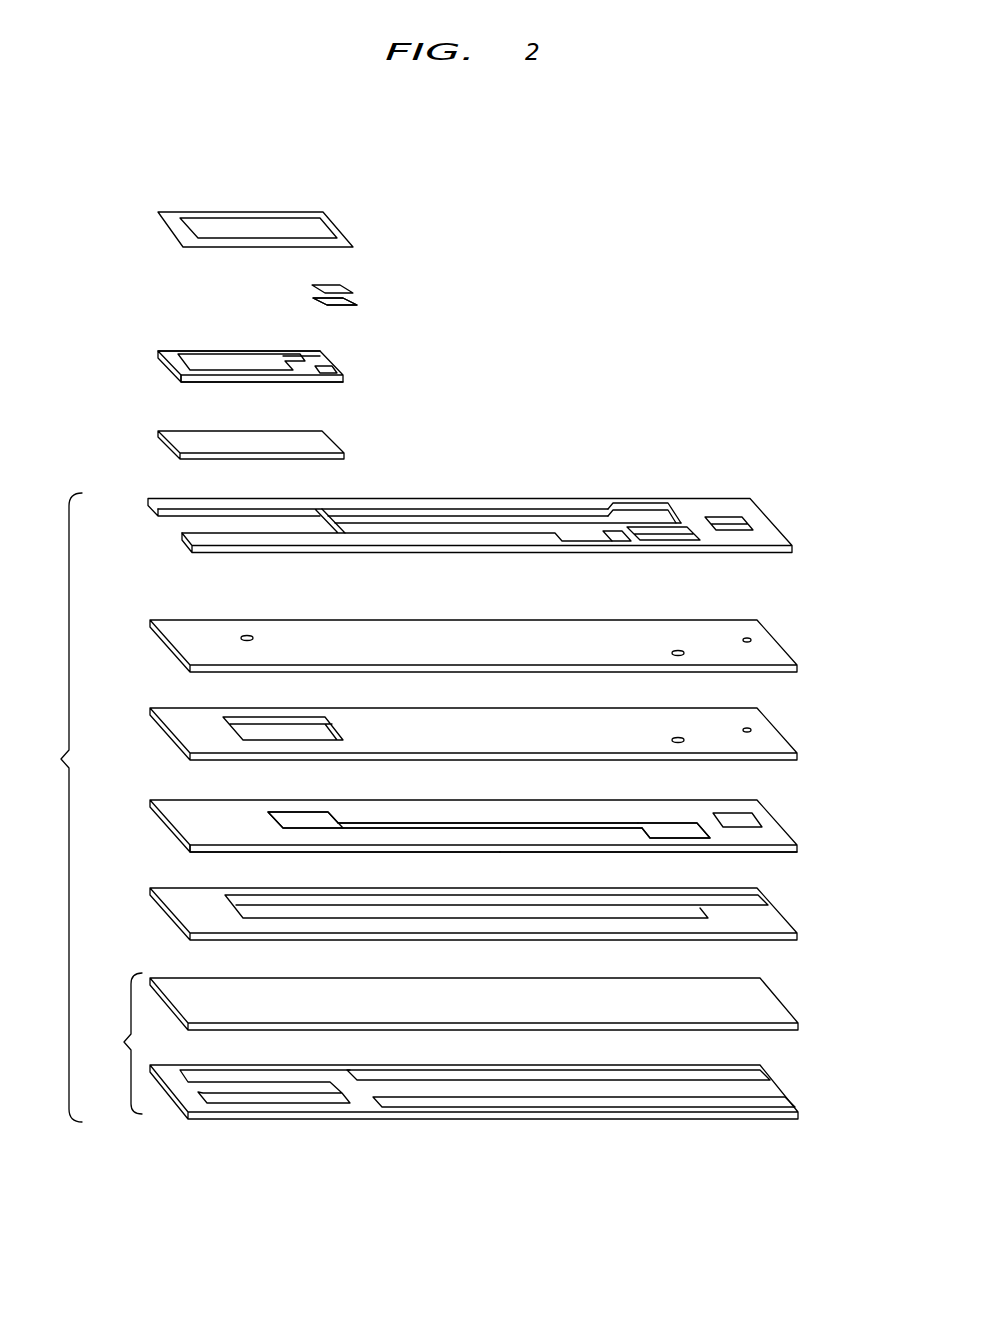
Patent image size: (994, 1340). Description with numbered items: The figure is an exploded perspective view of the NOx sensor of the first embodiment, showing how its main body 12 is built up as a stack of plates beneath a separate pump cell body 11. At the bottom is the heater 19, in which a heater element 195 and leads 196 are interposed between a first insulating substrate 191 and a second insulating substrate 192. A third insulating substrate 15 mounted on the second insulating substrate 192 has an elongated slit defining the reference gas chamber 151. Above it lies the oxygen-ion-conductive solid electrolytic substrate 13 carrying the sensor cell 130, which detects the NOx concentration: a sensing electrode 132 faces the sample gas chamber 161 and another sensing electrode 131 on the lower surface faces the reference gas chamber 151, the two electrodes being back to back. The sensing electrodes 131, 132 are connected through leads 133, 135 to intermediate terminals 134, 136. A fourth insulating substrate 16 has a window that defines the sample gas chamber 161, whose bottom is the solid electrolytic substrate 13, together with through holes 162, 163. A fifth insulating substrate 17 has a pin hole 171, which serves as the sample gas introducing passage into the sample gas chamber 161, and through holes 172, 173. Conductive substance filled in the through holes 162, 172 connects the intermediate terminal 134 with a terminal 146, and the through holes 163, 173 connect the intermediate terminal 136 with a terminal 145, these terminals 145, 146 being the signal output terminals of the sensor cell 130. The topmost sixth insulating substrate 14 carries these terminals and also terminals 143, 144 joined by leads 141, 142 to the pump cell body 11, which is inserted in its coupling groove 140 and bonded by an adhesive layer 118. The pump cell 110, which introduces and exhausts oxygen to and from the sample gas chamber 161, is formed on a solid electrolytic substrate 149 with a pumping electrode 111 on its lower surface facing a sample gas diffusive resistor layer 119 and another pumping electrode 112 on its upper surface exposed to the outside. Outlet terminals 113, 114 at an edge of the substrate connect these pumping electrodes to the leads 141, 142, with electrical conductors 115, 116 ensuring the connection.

The pump cell body 11 is at (150, 352).
The pump cell 110 is at (358, 359).
The pumping electrode 111 is at (225, 381).
The pumping electrode 112 is at (230, 366).
The outlet terminal 113 is at (340, 372).
The outlet terminal 114 is at (298, 355).
The electrical conductor 115 is at (345, 305).
The electrical conductor 116 is at (330, 288).
The adhesive layer 118 is at (290, 213).
The sample gas diffusive resistor layer 119 is at (176, 441).
The solid electrolytic substrate 149 is at (170, 352).
The main body 12 is at (54, 807).
The solid electrolytic substrate 13 is at (775, 835).
The sensor cell 130 is at (210, 823).
The sensing electrode 131 is at (310, 852).
The sensing electrode 132 is at (314, 817).
The lead 133 is at (510, 824).
The intermediate terminal 134 is at (668, 830).
The lead 135 is at (498, 853).
The intermediate terminal 136 is at (740, 825).
The sixth insulating substrate 14 is at (783, 520).
The coupling groove 140 is at (320, 528).
The lead 141 is at (487, 532).
The lead 142 is at (503, 510).
The terminal 143 is at (603, 532).
The terminal 144 is at (638, 510).
The terminal 145 is at (735, 520).
The terminal 146 is at (678, 525).
The third insulating substrate 15 is at (760, 932).
The reference gas chamber 151 is at (712, 912).
The fourth insulating substrate 16 is at (760, 748).
The sample gas chamber 161 is at (290, 735).
The through hole 162 is at (678, 737).
The through hole 163 is at (750, 728).
The fifth insulating substrate 17 is at (772, 652).
The pin hole 171 is at (252, 636).
The through hole 172 is at (678, 649).
The through hole 173 is at (748, 636).
The heater 19 is at (116, 1043).
The first insulating substrate 191 is at (755, 1090).
The second insulating substrate 192 is at (762, 1003).
The heater element 195 is at (277, 1101).
The lead 196 is at (550, 1101).